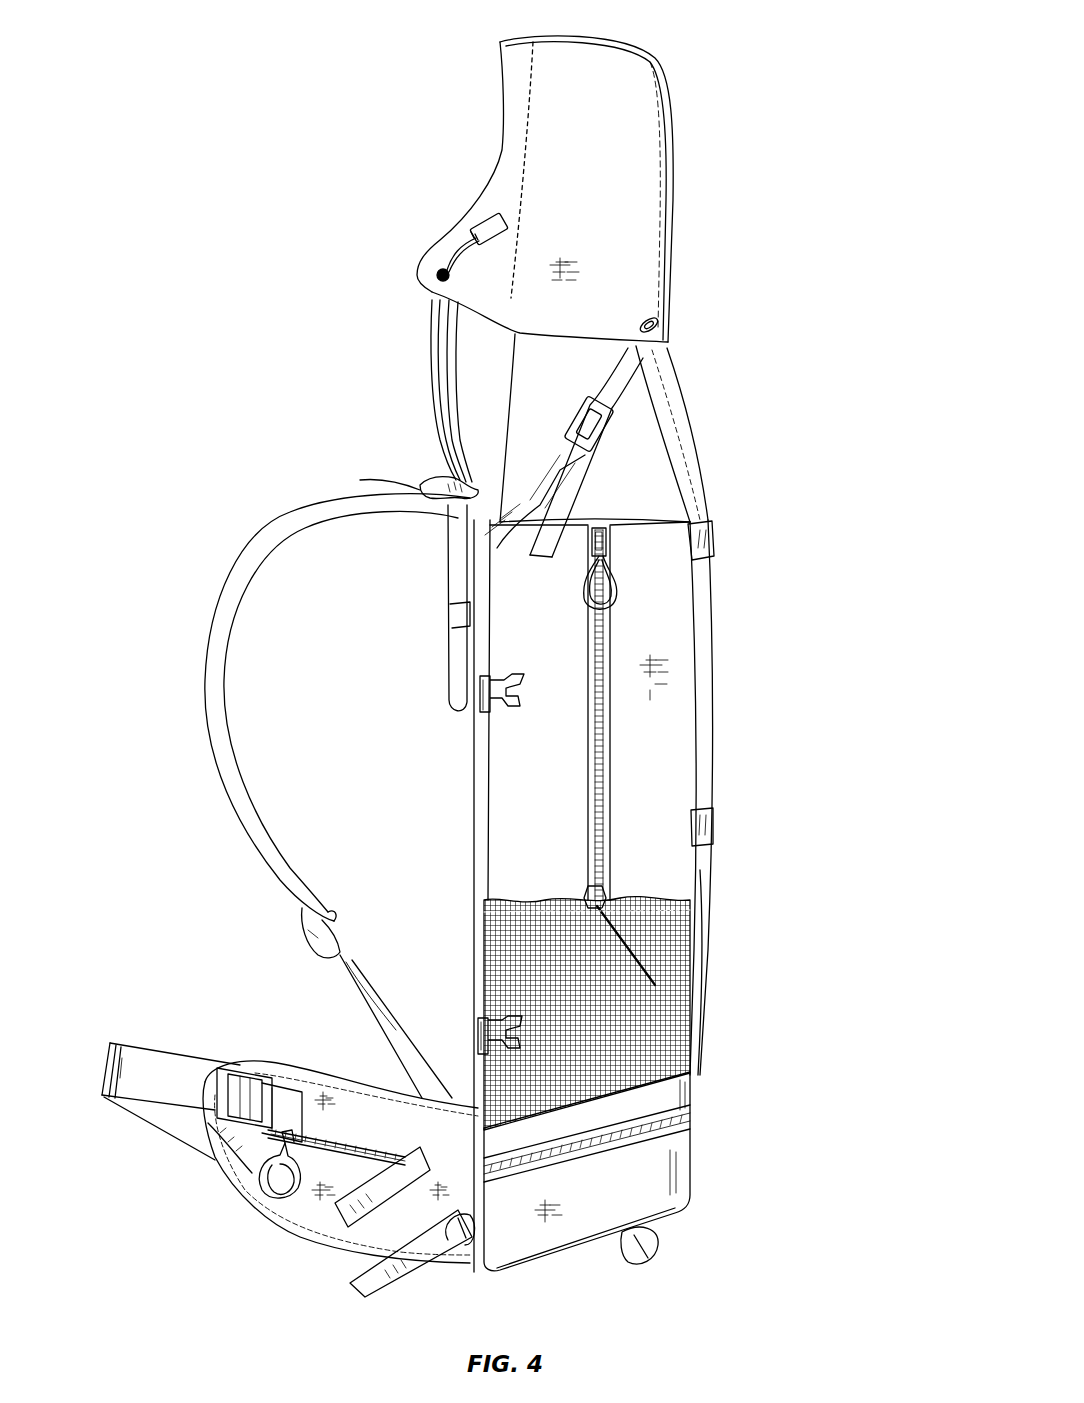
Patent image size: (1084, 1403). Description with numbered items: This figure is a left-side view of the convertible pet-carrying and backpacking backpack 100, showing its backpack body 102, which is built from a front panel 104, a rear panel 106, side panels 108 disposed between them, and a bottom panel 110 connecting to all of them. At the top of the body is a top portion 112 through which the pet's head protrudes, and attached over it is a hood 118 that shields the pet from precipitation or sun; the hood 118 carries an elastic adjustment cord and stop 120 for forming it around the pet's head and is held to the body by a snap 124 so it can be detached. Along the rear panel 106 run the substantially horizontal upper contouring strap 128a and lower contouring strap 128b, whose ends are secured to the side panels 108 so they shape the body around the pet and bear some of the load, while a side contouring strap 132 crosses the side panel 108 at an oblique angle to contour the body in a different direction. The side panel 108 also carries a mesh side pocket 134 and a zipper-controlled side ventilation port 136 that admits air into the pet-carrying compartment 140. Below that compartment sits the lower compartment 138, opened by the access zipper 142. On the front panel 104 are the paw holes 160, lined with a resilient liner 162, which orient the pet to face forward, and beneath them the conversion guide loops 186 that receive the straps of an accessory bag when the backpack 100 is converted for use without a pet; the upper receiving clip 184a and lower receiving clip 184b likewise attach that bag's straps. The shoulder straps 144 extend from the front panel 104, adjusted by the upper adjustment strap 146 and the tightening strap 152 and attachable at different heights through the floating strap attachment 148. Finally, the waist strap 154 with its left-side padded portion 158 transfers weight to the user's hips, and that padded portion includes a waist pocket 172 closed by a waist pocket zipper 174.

The backpack 100 is at (798, 138).
The backpack body 102 is at (660, 490).
The front panel 104 is at (480, 805).
The rear panel 106 is at (708, 706).
The side panels 108 is at (655, 645).
The bottom panel 110 is at (584, 1246).
The top portion 112 is at (645, 410).
The hood 118 is at (640, 76).
The elastic adjustment cord and stop 120 is at (446, 236).
The snap 124 is at (662, 322).
The upper contouring strap 128a is at (714, 541).
The lower contouring strap 128b is at (714, 829).
The side contouring strap 132 is at (580, 463).
The side pocket 134 is at (655, 985).
The side ventilation port 136 is at (608, 770).
The lower compartment 138 is at (660, 1171).
The pet-carrying compartment 140 is at (700, 872).
The access zipper 142 is at (665, 1120).
The shoulder straps 144 is at (226, 550).
The upper adjustment strap 146 is at (360, 482).
The floating strap attachment 148 is at (455, 612).
The tightening strap 152 is at (386, 1010).
The waist strap 154 is at (156, 1076).
The left-side padded portion 158 is at (334, 1226).
The paw hole 160 is at (431, 334).
The resilient liner 162 is at (447, 378).
The waist pocket 172 is at (306, 1206).
The waist pocket zipper 174 is at (316, 1128).
The upper receiving clip 184a is at (480, 690).
The lower receiving clip 184b is at (487, 1018).
The conversion guide loop 186 is at (440, 478).